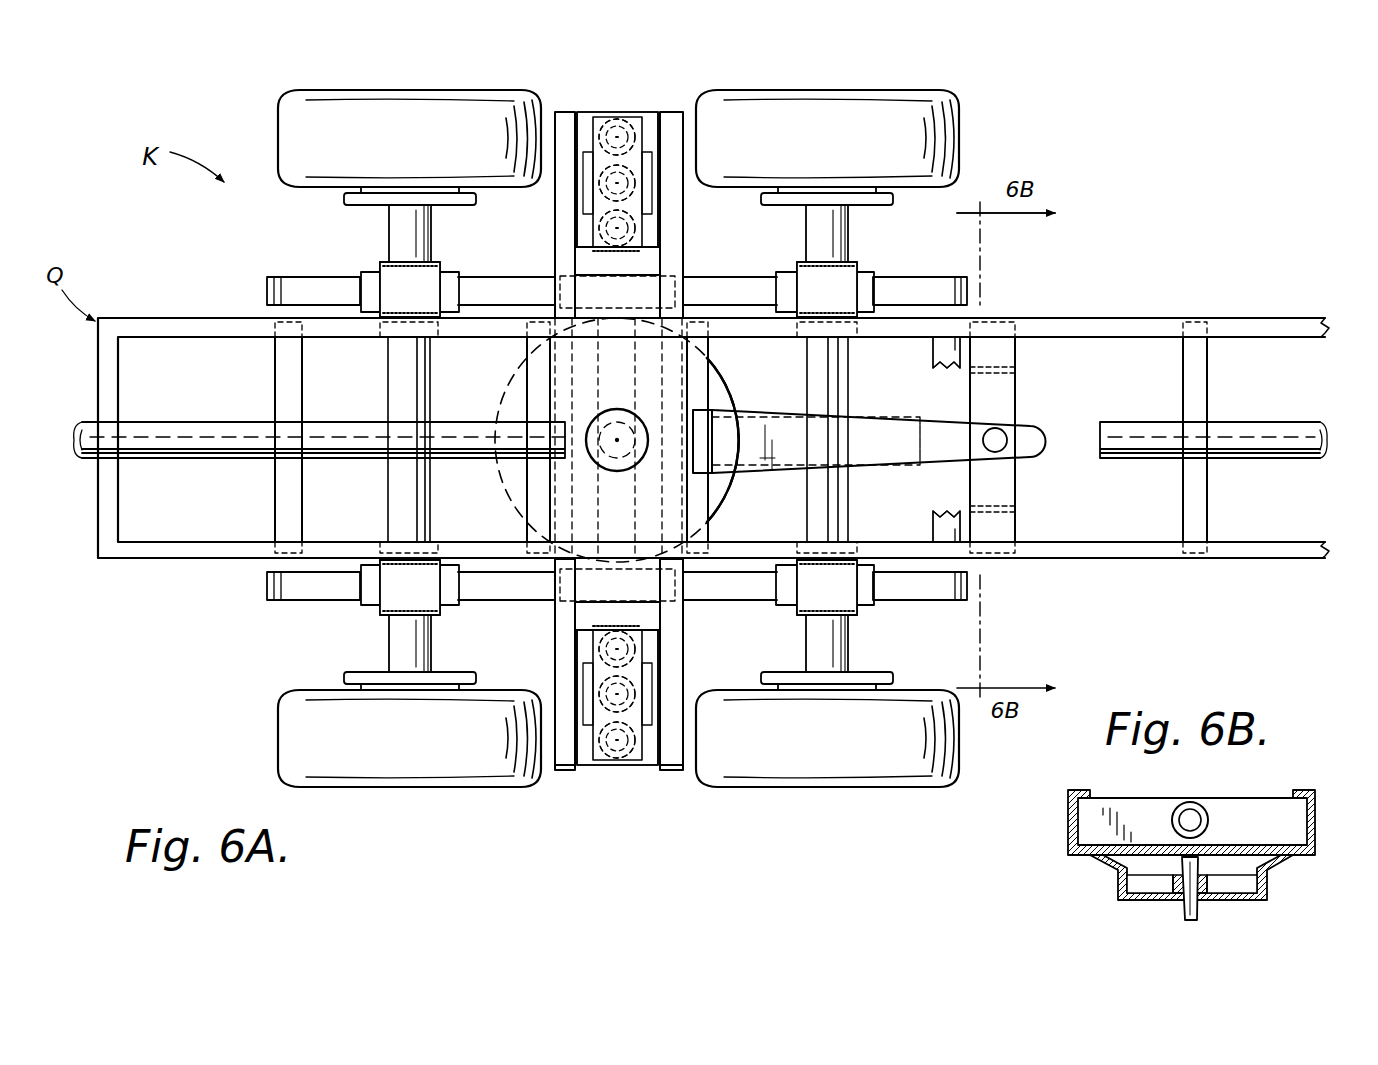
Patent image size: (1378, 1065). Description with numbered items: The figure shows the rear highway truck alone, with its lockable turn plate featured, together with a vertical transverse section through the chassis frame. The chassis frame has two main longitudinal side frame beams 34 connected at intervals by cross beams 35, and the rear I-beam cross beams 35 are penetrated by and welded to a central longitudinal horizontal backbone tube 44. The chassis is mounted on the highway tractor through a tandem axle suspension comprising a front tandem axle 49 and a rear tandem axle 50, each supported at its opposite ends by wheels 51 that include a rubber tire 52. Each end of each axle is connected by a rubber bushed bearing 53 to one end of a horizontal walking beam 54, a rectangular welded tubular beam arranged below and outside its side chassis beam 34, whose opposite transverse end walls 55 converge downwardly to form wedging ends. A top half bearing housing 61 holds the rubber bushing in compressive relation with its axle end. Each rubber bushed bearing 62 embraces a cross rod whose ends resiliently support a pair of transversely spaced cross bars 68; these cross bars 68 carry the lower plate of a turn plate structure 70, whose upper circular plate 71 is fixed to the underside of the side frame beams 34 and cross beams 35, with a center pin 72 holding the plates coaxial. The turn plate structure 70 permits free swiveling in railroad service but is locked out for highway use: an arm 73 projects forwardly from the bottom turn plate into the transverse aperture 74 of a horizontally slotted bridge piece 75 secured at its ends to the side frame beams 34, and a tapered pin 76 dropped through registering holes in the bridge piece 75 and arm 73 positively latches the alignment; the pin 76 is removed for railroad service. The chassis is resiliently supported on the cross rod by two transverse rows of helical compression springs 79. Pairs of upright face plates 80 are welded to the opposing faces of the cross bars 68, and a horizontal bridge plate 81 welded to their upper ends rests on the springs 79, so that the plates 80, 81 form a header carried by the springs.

In FIG. 6A, the main longitudinal side frame beam 34 is at (1305, 322).
In FIG. 6B, the main longitudinal side frame beam 34 is at (1315, 812).
In FIG. 6A, the cross beam 35 is at (280, 375).
In FIG. 6B, the cross beam 35 is at (1255, 795).
In FIG. 6A, the central longitudinal horizontal backbone tube 44 is at (78, 425).
In FIG. 6B, the central longitudinal horizontal backbone tube 44 is at (1190, 800).
In FIG. 6A, the front tandem axle 49 is at (845, 216).
In FIG. 6A, the rear tandem axle 50 is at (390, 215).
In FIG. 6A, the wheel 51 is at (612, 437).
In FIG. 6A, the rubber tire 52 is at (388, 97).
In FIG. 6A, the rubber bushed bearing 53 is at (441, 268).
In FIG. 6A, the walking beam 54 is at (340, 276).
In FIG. 6A, the transverse end wall 55 is at (268, 290).
In FIG. 6A, the top half bearing housing 61 is at (420, 292).
In FIG. 6A, the rubber bushed bearing 62 is at (654, 265).
In FIG. 6A, the cross bar 68 is at (555, 655).
In FIG. 6A, the turn plate structure 70 is at (522, 371).
In FIG. 6A, the upper circular plate 71 is at (512, 407).
In FIG. 6A, the center pin 72 is at (612, 412).
In FIG. 6A, the arm 73 is at (880, 430).
In FIG. 6B, the arm 73 is at (1215, 890).
In FIG. 6B, the transverse aperture 74 is at (1130, 893).
In FIG. 6A, the bridge piece 75 is at (1005, 376).
In FIG. 6B, the bridge piece 75 is at (1265, 885).
In FIG. 6A, the tapered pin 76 is at (1000, 452).
In FIG. 6B, the tapered pin 76 is at (1188, 910).
In FIG. 6A, the helical compression spring 79 is at (620, 118).
In FIG. 6A, the face plate 80 is at (572, 125).
In FIG. 6A, the bridge plate 81 is at (585, 115).